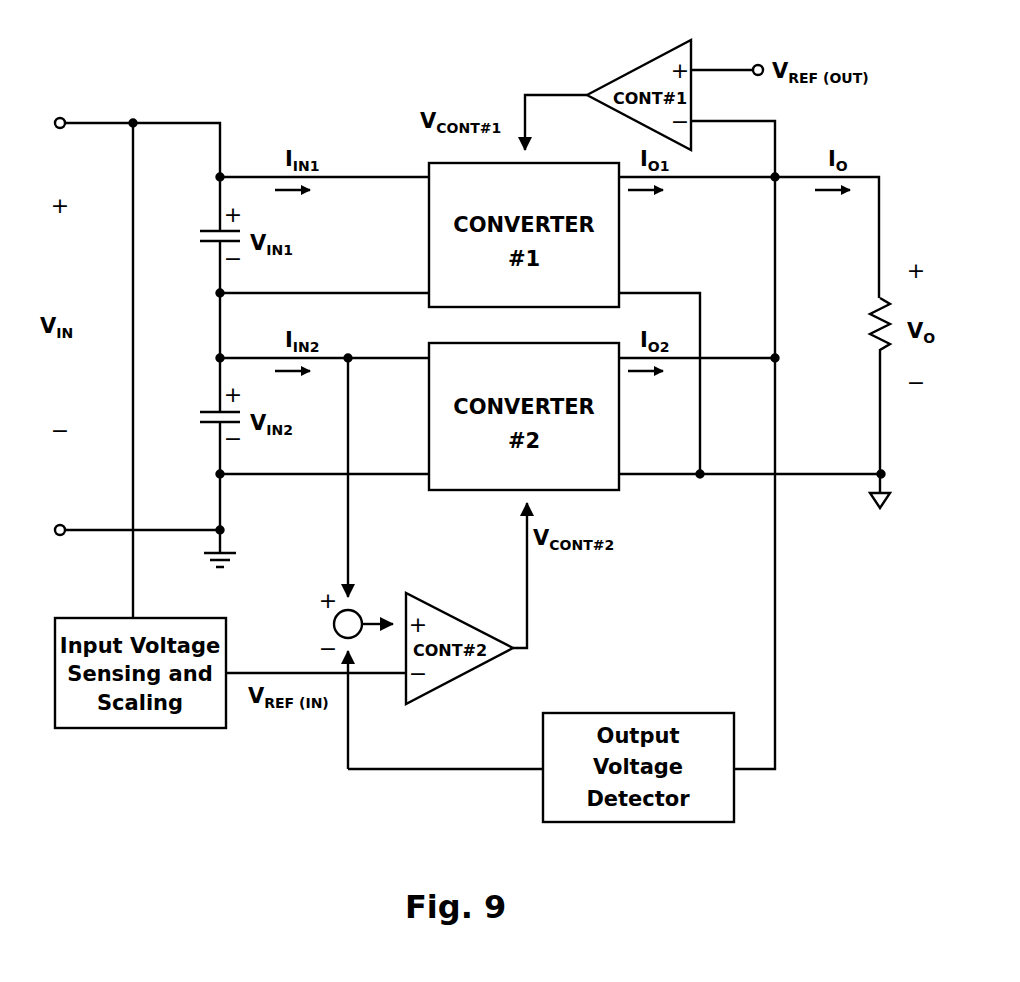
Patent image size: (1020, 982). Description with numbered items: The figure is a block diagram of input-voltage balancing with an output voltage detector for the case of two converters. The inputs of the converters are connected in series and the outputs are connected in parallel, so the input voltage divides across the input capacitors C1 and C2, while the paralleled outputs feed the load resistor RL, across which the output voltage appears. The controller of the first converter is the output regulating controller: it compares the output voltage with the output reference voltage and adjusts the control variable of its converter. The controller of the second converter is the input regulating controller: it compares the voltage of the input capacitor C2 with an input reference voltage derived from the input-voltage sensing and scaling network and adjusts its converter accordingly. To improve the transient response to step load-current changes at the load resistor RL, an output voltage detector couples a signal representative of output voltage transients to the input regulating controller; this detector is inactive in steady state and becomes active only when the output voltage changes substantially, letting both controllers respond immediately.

The input capacitor C1 is at (200, 321).
The input capacitor C2 is at (200, 470).
The load resistor RL is at (860, 395).